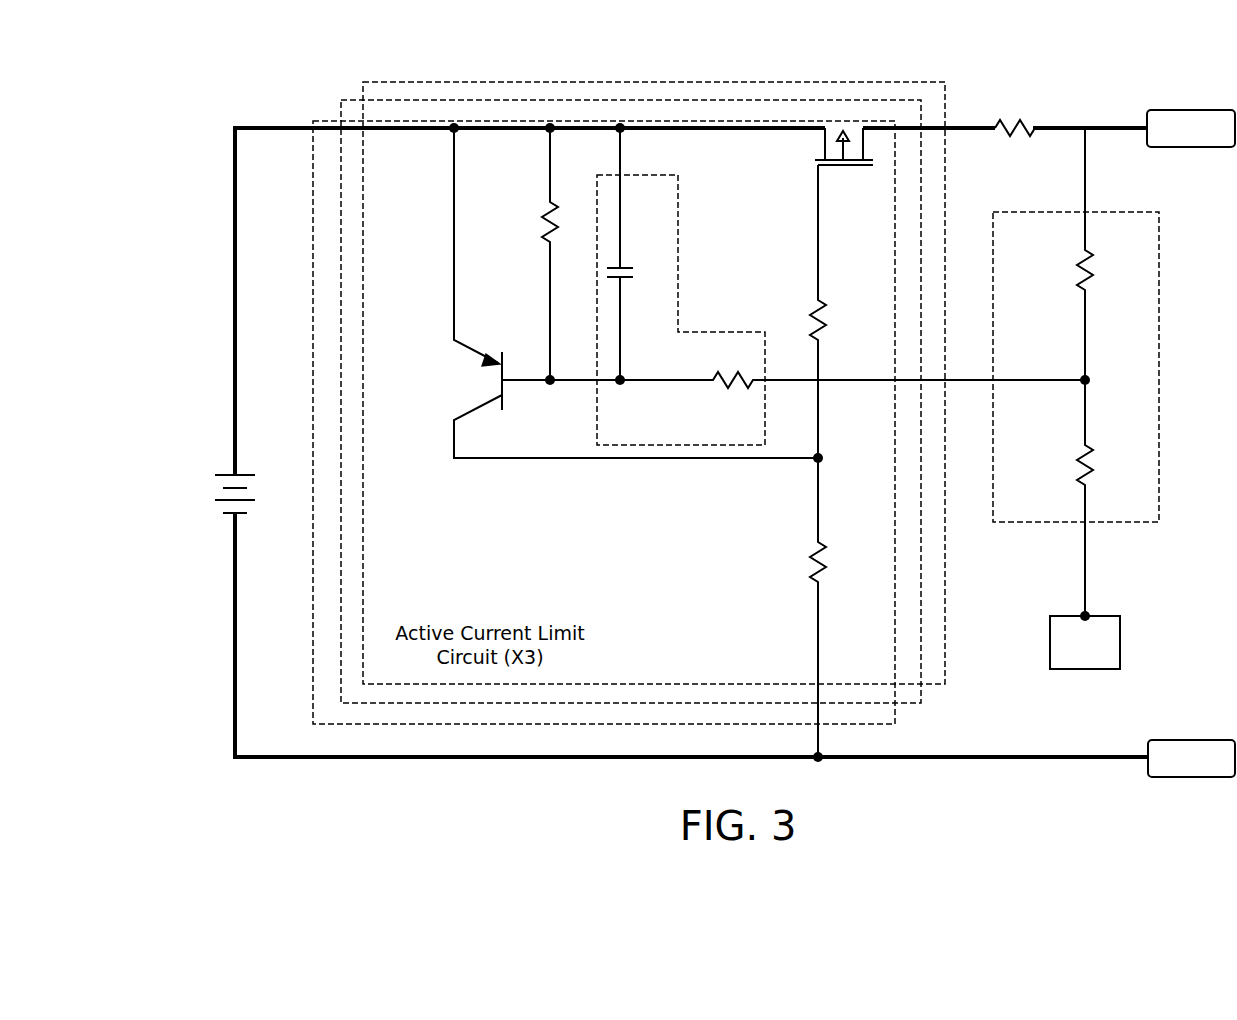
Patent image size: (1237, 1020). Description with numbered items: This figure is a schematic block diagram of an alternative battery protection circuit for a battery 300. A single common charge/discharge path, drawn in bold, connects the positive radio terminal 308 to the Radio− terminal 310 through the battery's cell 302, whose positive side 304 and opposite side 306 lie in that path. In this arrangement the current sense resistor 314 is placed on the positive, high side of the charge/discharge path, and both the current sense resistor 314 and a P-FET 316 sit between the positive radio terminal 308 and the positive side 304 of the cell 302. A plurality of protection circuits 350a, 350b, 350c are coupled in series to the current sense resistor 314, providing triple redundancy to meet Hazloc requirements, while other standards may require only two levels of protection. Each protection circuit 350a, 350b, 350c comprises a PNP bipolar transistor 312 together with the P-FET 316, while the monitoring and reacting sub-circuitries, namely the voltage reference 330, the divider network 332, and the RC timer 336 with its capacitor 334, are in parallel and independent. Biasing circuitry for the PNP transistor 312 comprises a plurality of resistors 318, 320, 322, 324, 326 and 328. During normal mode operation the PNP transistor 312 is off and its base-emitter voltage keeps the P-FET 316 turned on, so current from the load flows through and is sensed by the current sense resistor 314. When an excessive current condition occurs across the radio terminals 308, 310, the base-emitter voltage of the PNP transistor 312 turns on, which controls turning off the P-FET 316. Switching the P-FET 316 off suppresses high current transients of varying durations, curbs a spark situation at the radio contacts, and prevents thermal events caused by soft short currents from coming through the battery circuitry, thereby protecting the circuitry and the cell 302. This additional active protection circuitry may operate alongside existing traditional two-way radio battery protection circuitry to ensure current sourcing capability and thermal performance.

The battery 300 is at (192, 88).
The battery cell 302 is at (212, 490).
The positive side of battery cell 304 is at (210, 470).
The negative battery terminal 306 is at (215, 517).
The positive radio terminal 308 is at (1195, 110).
The RADIO- terminal 310 is at (1192, 740).
The PNP bipolar transistor Q1 312 is at (505, 400).
The current sense resistor RP1 314 is at (1006, 118).
The P-FET 316 is at (858, 168).
The resistor R1 318 is at (1080, 467).
The resistor R2 320 is at (545, 222).
The resistor R3 322 is at (737, 388).
The resistor R4 324 is at (1080, 272).
The resistor R5 326 is at (813, 565).
The resistor R6 328 is at (813, 322).
The Vref 330 is at (1048, 641).
The divider network 332 is at (1160, 350).
The capacitor C1 334 is at (627, 265).
The RC timer 336 is at (679, 238).
The protection circuit 350a is at (445, 82).
The protection circuit 350b is at (341, 100).
The protection circuit 350c is at (320, 121).